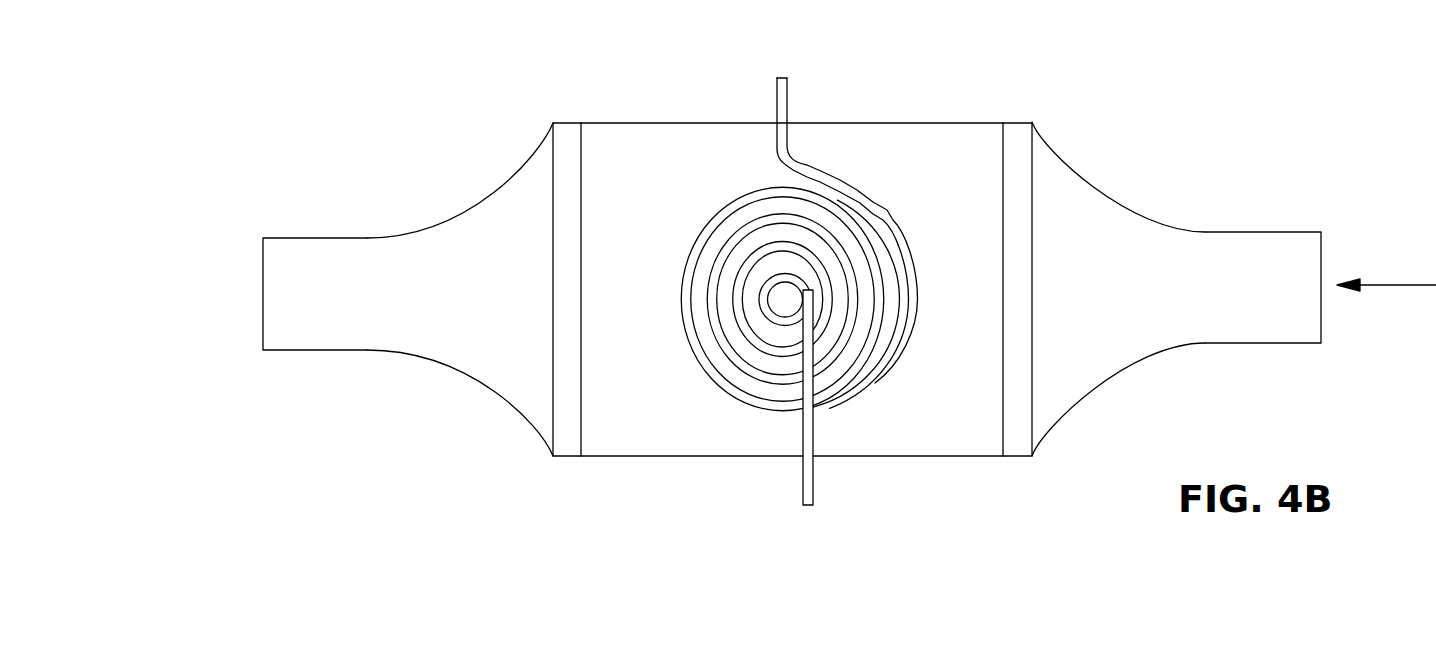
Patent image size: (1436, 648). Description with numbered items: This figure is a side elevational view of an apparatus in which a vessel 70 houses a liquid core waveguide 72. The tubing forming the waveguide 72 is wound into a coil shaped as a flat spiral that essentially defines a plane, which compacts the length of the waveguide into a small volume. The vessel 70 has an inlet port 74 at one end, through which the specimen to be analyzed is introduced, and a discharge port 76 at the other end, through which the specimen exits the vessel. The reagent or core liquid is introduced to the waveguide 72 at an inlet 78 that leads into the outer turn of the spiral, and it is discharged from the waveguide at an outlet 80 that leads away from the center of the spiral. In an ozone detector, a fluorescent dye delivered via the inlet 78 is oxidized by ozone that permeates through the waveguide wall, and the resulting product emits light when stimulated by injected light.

The vessel 70 is at (950, 122).
The liquid core waveguide 72 is at (700, 234).
The inlet port 74 is at (1321, 257).
The discharge port 76 is at (263, 273).
The inlet 78 is at (783, 78).
The outlet 80 is at (806, 507).